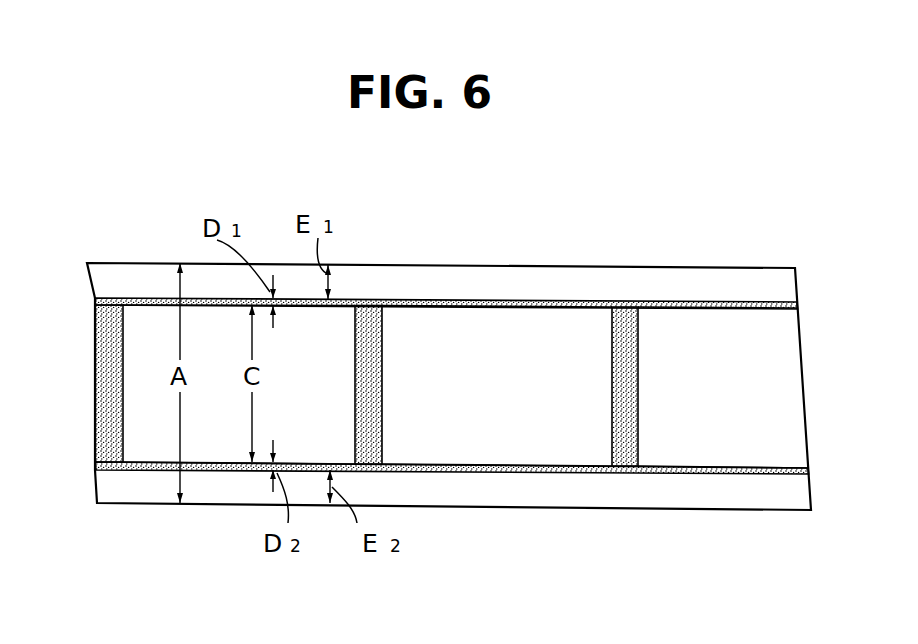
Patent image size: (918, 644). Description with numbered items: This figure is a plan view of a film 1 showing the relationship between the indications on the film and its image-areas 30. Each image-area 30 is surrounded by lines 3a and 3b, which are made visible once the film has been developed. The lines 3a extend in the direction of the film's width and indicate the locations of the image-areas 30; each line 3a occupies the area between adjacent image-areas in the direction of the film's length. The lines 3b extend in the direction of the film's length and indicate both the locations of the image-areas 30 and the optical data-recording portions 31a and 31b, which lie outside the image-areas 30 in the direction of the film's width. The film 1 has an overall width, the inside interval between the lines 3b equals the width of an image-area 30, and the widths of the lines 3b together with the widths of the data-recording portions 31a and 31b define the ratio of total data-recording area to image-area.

The film 1 is at (158, 250).
The lines extending in the direction of the film's width 3a is at (384, 335).
The lines extending in the direction of the film's length 3b is at (443, 300).
The image-areas 30 is at (560, 353).
The optical data-recording portion 31a is at (520, 278).
The optical data-recording portion 31b is at (558, 486).